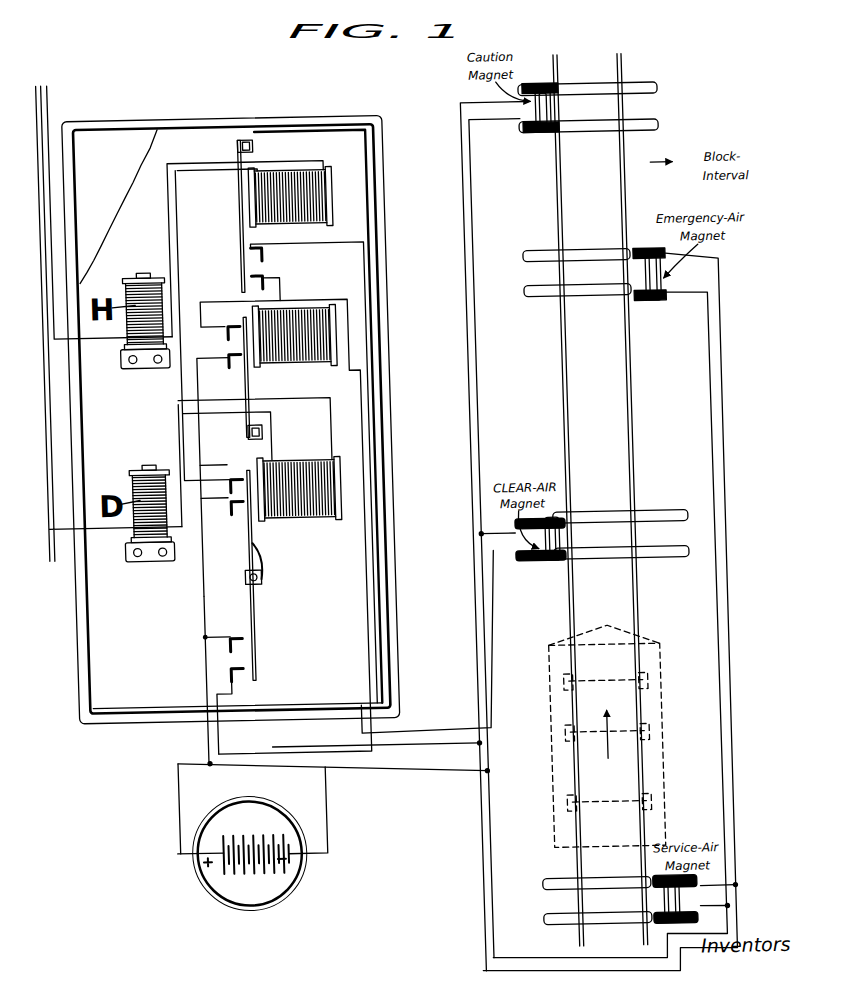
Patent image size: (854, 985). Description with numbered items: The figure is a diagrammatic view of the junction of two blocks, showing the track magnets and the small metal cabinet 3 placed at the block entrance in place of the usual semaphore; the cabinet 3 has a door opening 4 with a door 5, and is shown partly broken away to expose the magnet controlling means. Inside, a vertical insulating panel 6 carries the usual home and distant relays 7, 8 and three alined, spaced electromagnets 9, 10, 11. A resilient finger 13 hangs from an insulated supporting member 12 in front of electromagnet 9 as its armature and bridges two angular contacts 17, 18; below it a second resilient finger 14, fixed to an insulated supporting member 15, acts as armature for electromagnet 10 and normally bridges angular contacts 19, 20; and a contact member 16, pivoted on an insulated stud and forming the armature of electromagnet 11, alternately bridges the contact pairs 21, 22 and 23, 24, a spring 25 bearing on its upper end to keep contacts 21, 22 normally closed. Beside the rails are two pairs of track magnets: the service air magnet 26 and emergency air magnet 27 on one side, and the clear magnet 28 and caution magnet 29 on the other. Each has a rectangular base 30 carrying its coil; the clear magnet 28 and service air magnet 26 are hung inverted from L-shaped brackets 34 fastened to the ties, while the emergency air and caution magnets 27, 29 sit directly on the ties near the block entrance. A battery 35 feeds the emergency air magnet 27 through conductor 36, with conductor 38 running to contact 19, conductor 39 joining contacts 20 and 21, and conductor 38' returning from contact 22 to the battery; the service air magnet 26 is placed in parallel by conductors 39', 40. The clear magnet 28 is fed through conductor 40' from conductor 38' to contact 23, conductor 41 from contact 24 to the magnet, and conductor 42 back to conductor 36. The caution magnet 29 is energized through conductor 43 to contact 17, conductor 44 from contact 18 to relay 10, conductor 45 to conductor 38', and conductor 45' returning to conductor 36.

The cabinet 3 is at (201, 124).
The door opening 4 is at (114, 128).
The door 5 is at (81, 144).
The panel 6 is at (308, 136).
The home relay 7 is at (130, 283).
The distant relay 8 is at (126, 481).
The electromagnet 9 is at (314, 198).
The electromagnet 10 is at (290, 328).
The electromagnet 11 is at (302, 524).
The supporting member 12 is at (246, 143).
The resilient finger 13 is at (230, 237).
The resilient finger 14 is at (268, 376).
The insulated supporting member 15 is at (249, 438).
The contact member 16 is at (235, 625).
The angular contact 17 is at (240, 259).
The angular contact 18 is at (240, 287).
The angular contact 19 is at (215, 338).
The angular contact 20 is at (215, 366).
The contact 21 is at (218, 483).
The contact 22 is at (216, 524).
The contact 23 is at (224, 650).
The contact 24 is at (224, 686).
The spring 25 is at (241, 561).
The service air magnet 26 is at (635, 913).
The emergency air magnet 27 is at (636, 295).
The clear magnet 28 is at (537, 541).
The caution magnet 29 is at (547, 119).
The rectangular base 30 is at (533, 141).
The L-shaped brackets 34 is at (525, 572).
The battery 35 is at (229, 880).
The conductor 36 is at (390, 785).
The conductor 38 is at (543, 614).
The conductor 38' is at (169, 725).
The conductor 39 is at (181, 478).
The conductor 39' is at (743, 914).
The conductor 40 is at (741, 877).
The conductor 40' is at (220, 625).
The conductor 41 is at (252, 752).
The conductor 42 is at (461, 542).
The conductor 43 is at (336, 249).
The conductor 44 is at (276, 289).
The conductor 45 is at (321, 543).
The conductor 45' is at (507, 538).